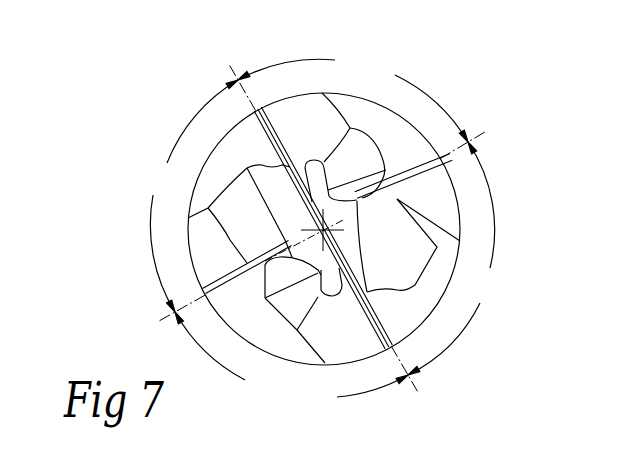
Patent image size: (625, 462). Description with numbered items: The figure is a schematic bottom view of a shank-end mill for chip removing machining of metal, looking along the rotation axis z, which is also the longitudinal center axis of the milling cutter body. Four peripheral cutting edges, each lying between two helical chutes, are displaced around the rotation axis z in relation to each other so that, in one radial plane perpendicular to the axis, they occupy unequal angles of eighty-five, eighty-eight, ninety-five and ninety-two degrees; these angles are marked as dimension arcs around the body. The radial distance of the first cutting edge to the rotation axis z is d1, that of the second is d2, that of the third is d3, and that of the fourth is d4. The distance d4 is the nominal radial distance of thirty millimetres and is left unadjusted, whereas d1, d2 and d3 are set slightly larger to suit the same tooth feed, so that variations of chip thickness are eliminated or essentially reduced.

The radial distance of the first peripheral cutting edge d1 is at (257, 111).
The radial distance of the second peripheral cutting edge d2 is at (443, 160).
The radial distance of the third peripheral cutting edge d3 is at (390, 347).
The radial distance of the fourth peripheral cutting edge d4 is at (205, 296).
The rotation axis z is at (323, 242).